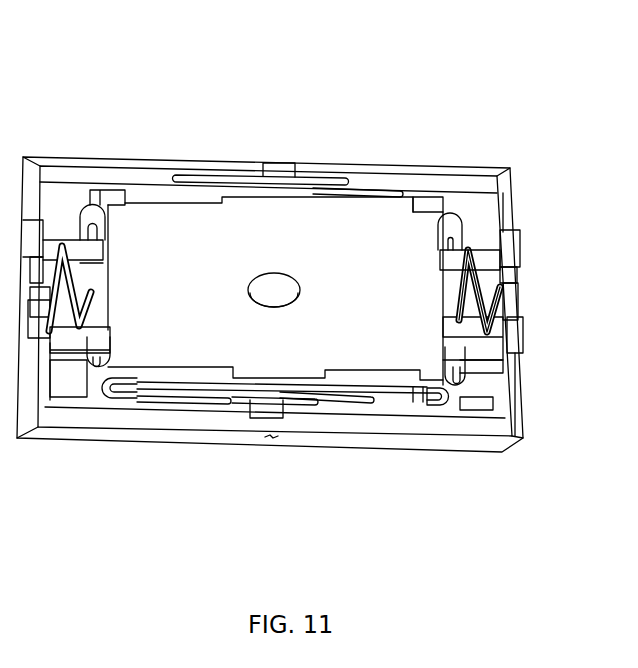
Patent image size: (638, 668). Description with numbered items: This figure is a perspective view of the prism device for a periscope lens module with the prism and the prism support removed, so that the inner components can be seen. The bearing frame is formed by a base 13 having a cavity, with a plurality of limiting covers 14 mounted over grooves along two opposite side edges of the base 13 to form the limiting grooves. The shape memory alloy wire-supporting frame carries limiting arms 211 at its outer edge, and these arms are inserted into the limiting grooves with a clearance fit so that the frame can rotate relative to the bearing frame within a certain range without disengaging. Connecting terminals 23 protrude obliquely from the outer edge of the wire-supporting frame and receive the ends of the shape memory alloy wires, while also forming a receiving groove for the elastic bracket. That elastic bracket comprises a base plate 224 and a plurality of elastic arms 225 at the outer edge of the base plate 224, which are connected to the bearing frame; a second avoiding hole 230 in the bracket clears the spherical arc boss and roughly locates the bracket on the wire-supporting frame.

The base 13 is at (172, 163).
The limiting cover 14 is at (517, 333).
The connecting terminal 23 is at (450, 210).
The limiting arm 211 is at (485, 258).
The base plate 224 is at (372, 220).
The elastic arm 225 is at (478, 292).
The second avoiding hole 230 is at (268, 273).